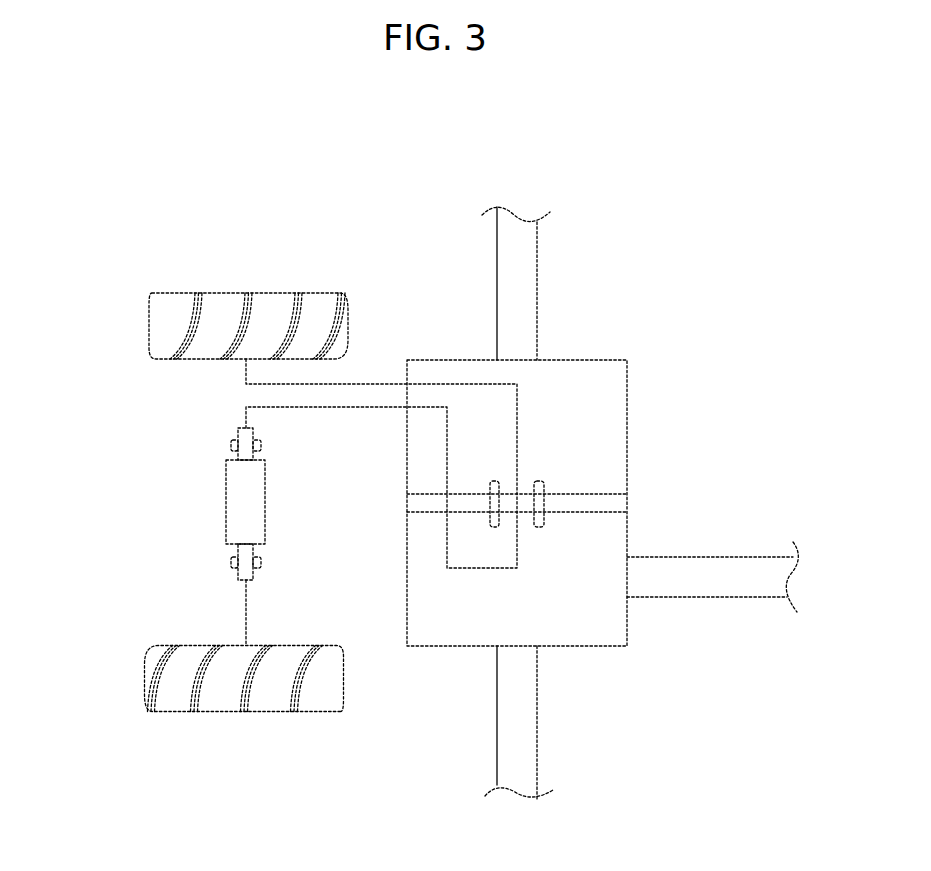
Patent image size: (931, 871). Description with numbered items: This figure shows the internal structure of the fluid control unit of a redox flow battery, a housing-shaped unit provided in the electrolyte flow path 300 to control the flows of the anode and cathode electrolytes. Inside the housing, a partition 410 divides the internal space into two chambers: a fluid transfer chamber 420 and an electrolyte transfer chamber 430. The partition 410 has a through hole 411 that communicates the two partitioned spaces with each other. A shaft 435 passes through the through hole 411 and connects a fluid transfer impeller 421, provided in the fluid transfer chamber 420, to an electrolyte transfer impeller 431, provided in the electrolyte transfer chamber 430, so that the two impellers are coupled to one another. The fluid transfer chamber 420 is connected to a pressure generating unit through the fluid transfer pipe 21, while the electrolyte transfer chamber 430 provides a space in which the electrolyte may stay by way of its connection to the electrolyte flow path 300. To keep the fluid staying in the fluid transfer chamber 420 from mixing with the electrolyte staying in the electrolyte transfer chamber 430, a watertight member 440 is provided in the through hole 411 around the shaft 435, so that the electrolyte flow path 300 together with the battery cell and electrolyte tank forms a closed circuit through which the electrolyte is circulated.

The fluid transfer pipe 21 is at (525, 278).
The electrolyte flow path 300 is at (517, 693).
The partition 410 is at (594, 497).
The through hole 411 is at (518, 498).
The fluid transfer chamber 420 is at (596, 382).
The fluid transfer impeller 421 is at (262, 305).
The electrolyte transfer chamber 430 is at (456, 627).
The electrolyte transfer impeller 431 is at (278, 697).
The shaft 435 is at (243, 508).
The watertight member 440 is at (545, 517).